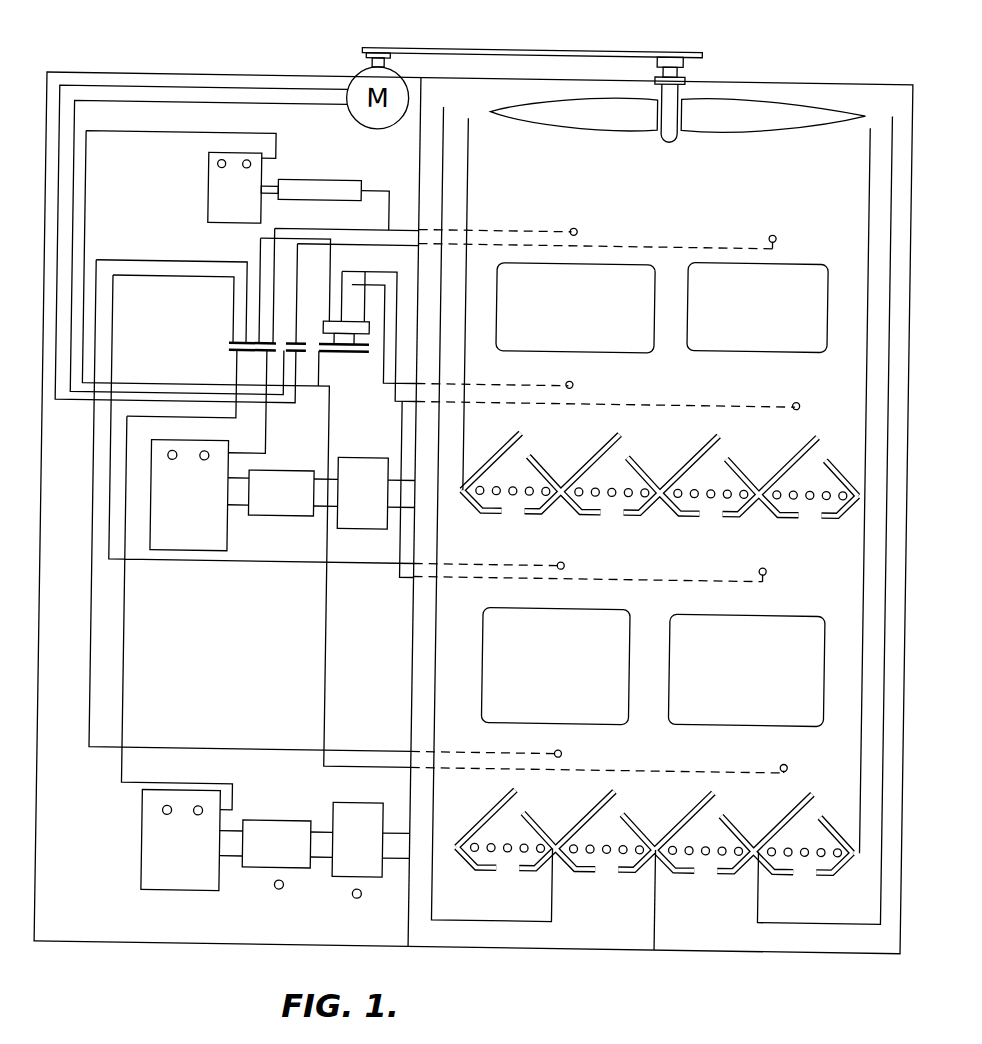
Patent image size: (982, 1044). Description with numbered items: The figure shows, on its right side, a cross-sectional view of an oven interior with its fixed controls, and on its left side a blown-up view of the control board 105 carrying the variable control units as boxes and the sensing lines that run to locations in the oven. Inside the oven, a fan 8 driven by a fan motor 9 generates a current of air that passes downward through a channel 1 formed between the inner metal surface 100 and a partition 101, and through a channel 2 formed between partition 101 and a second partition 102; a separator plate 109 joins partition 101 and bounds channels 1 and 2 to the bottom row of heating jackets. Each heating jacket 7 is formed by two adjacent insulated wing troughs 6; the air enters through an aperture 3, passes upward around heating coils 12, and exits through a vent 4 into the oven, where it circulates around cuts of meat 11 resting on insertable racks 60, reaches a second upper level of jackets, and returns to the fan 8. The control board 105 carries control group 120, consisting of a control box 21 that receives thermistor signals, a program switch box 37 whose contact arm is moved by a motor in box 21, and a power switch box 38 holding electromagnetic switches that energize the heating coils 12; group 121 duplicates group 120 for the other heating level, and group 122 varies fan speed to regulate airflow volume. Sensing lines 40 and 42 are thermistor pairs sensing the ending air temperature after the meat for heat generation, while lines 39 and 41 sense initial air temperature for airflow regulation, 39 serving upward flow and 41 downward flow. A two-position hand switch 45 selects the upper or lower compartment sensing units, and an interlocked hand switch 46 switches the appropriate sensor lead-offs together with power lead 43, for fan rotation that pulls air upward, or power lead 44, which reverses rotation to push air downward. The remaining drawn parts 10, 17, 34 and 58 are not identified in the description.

The channel 1 is at (885, 941).
The channel 2 is at (823, 568).
The aperture 3 is at (824, 857).
The vent 4 is at (735, 440).
The insulated wing trough 6 is at (572, 470).
The heating jacket 7 is at (505, 815).
The fan 8 is at (620, 122).
The fan motor 9 is at (358, 47).
The fan shaft 10 is at (512, 43).
The cuts of meat 11 is at (795, 615).
The heating coils 12 is at (628, 842).
The relay 17 is at (178, 812).
The control box 21 is at (158, 508).
The control unit 34 is at (352, 452).
The program switch box 37 is at (275, 816).
The power switch box 38 is at (330, 176).
The airflow sensing line 39 is at (796, 755).
The heat sensing line 40 is at (180, 781).
The airflow sensing line 41 is at (767, 560).
The heat sensing line 42 is at (572, 745).
The power lead 43 is at (330, 84).
The power lead 44 is at (290, 101).
The hand switch 45 is at (326, 318).
The hand switch 46 is at (375, 352).
The control unit 58 is at (355, 798).
The insertable racks 60 is at (663, 572).
The inner metal surface 100 is at (421, 172).
The partition 101 is at (871, 547).
The partition 102 is at (893, 388).
The control board 105 is at (118, 942).
The separator plate 109 is at (770, 912).
The control group 120 is at (133, 908).
The control group 121 is at (244, 522).
The control group 122 is at (181, 213).